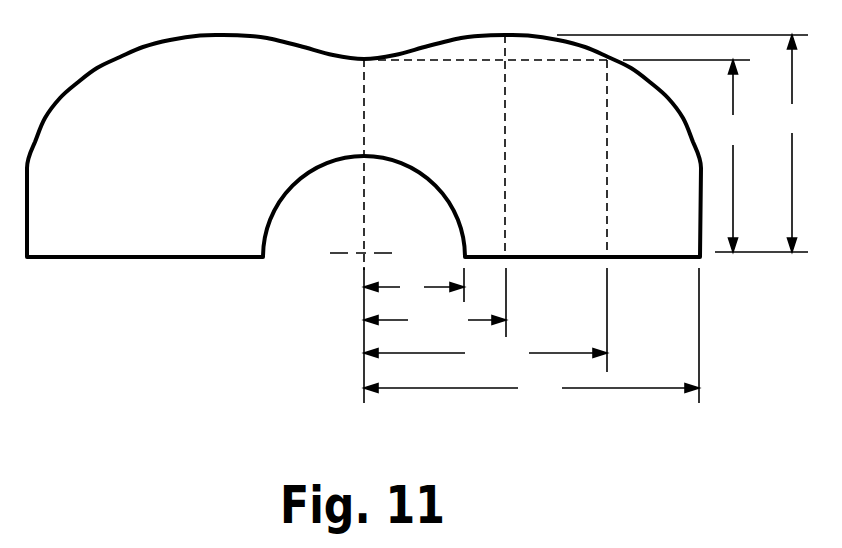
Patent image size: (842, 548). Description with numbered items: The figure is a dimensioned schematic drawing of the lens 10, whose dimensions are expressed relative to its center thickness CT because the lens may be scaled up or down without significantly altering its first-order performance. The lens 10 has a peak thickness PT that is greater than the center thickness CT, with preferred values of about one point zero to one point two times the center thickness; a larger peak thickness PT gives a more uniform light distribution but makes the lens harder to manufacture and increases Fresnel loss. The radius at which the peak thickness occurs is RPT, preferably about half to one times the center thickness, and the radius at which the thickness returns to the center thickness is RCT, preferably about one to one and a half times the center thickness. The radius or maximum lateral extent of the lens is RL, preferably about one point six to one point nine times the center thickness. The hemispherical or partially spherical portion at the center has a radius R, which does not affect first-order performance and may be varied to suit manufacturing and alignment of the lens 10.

The lens 10 is at (121, 198).
The radius of the hemispherical or partially spherical portion R is at (414, 286).
The radius at which the peak thickness occurs RPT is at (435, 303).
The radius at which the thickness returns to the center thickness RCT is at (485, 320).
The radius of the lens RL is at (531, 388).
The center thickness CT is at (688, 156).
The peak thickness PT is at (683, 143).